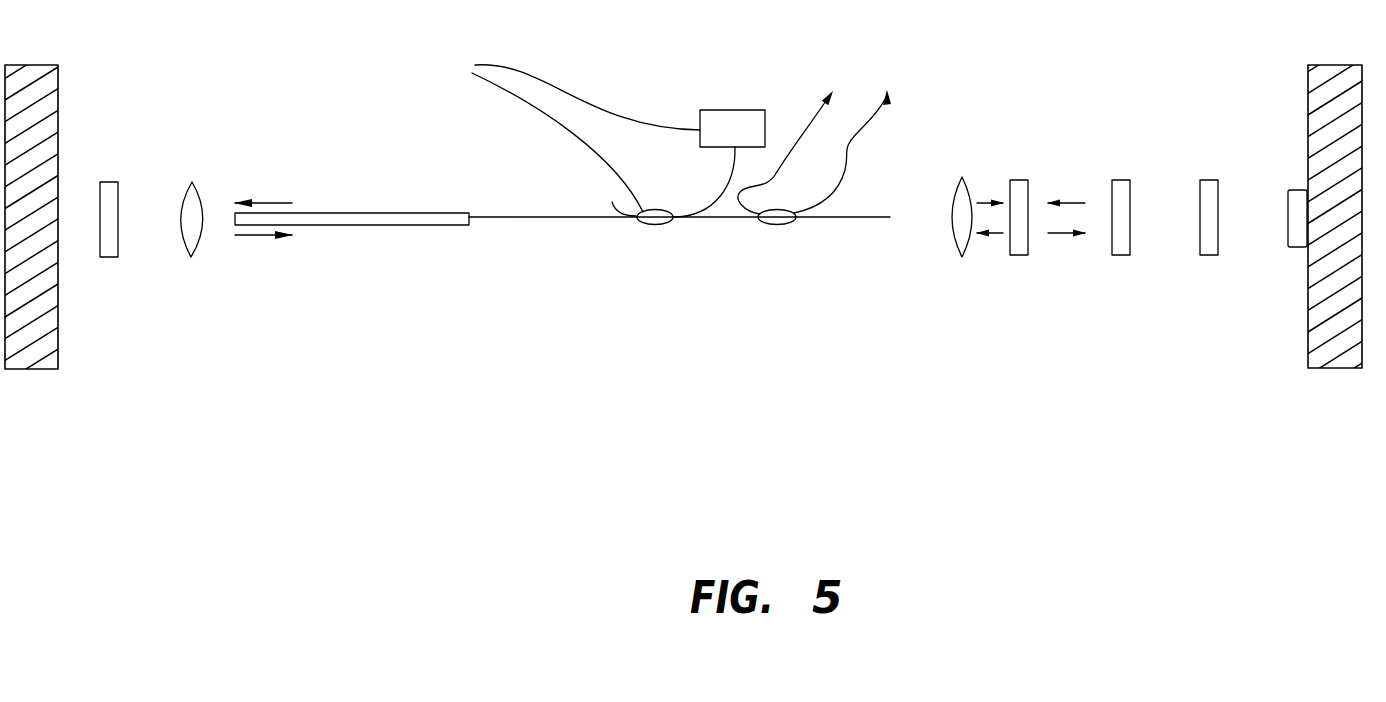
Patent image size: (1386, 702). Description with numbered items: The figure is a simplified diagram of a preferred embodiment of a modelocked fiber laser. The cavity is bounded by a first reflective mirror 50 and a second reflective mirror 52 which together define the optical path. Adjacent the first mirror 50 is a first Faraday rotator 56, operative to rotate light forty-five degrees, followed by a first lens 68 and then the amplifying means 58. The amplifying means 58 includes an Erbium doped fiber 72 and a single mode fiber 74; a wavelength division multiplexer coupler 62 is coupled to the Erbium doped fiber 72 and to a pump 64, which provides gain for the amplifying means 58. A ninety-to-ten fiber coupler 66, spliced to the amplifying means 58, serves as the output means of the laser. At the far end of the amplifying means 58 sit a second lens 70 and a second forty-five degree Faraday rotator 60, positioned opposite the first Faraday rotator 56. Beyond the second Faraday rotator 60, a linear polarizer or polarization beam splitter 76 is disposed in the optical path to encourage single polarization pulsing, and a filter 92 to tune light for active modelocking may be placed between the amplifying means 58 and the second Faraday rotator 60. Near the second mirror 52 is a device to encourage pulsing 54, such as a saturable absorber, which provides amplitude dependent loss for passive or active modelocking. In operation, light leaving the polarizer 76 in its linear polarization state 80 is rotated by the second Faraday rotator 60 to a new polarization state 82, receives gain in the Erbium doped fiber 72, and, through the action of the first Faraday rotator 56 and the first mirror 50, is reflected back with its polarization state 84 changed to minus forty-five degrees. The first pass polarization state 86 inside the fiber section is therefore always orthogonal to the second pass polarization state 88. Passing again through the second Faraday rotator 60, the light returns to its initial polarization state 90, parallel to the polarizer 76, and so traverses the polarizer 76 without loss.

The first reflective mirror 50 is at (58, 342).
The second reflective mirror 52 is at (1307, 322).
The device to encourage pulsing 54 is at (1288, 200).
The first Faraday rotator 56 is at (118, 257).
The amplifying means 58 is at (450, 212).
The second 45 degree Faraday rotator 60 is at (1017, 255).
The wavelength division multiplexer coupler 62 is at (658, 225).
The pump 64 is at (750, 110).
The 90:10 fiber coupler 66 is at (777, 225).
The first lens 68 is at (192, 182).
The second lens 70 is at (962, 180).
The Erbium doped fiber 72 is at (373, 225).
The single mode fiber 74 is at (542, 220).
The linear polarizer or polarization beam splitter 76 is at (1120, 255).
The linear polarization state 80 is at (1080, 202).
The new polarization state 82 is at (1002, 202).
The polarization state 84 is at (980, 235).
The first pass polarization state 86 is at (263, 203).
The second pass polarization state 88 is at (258, 235).
The initial polarization state 90 is at (1063, 235).
The filter 92 is at (1208, 255).